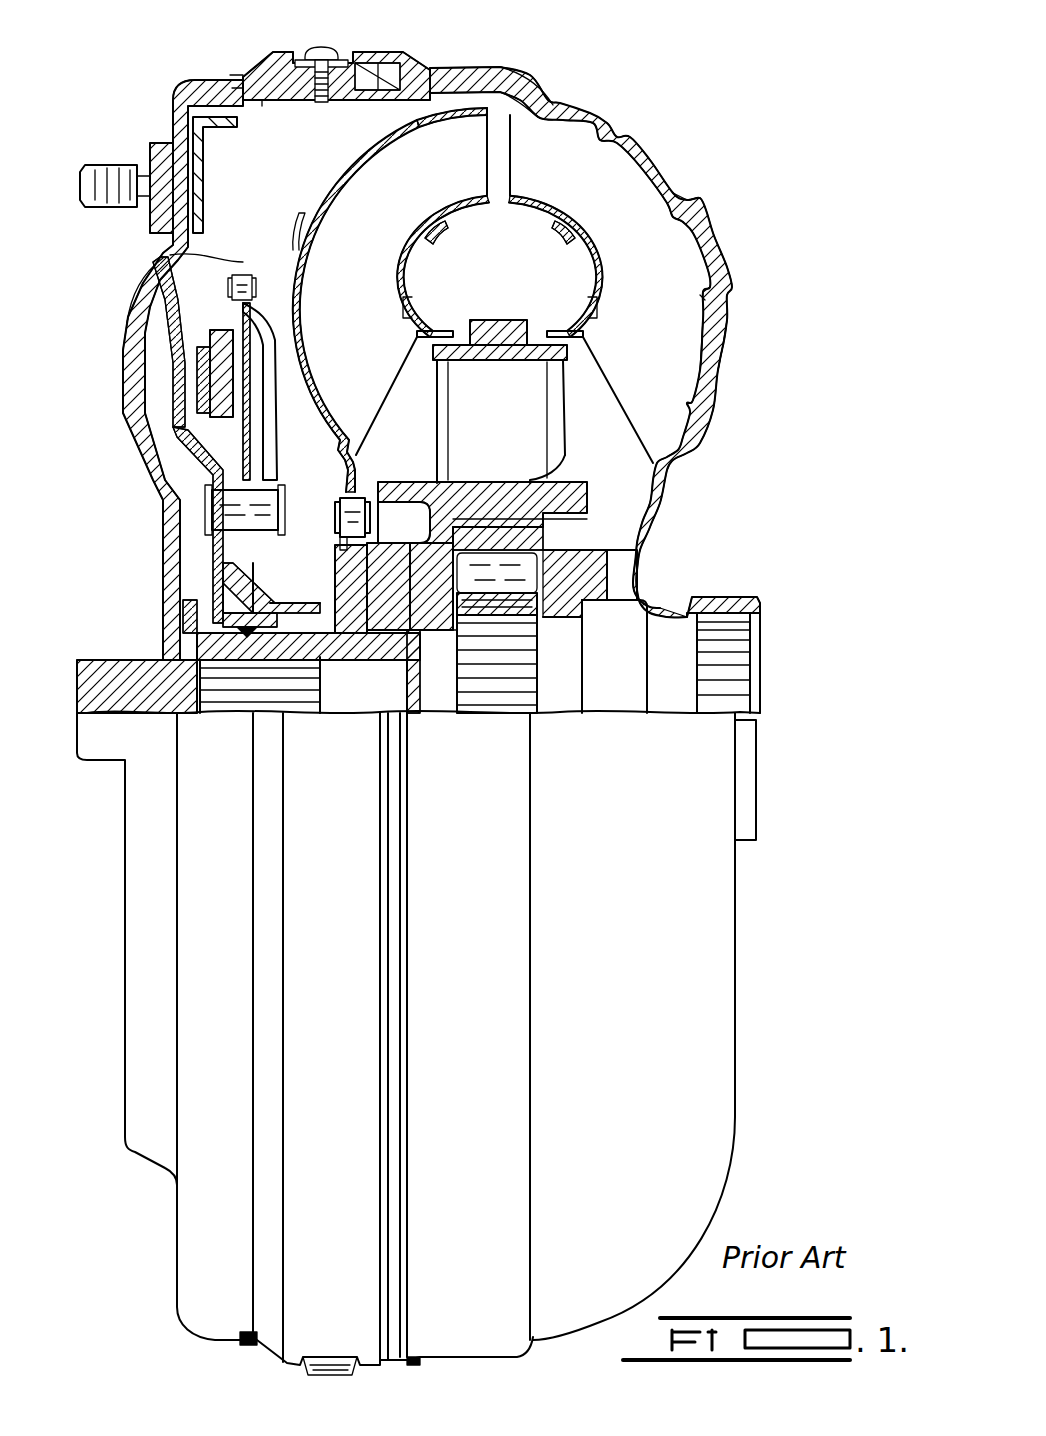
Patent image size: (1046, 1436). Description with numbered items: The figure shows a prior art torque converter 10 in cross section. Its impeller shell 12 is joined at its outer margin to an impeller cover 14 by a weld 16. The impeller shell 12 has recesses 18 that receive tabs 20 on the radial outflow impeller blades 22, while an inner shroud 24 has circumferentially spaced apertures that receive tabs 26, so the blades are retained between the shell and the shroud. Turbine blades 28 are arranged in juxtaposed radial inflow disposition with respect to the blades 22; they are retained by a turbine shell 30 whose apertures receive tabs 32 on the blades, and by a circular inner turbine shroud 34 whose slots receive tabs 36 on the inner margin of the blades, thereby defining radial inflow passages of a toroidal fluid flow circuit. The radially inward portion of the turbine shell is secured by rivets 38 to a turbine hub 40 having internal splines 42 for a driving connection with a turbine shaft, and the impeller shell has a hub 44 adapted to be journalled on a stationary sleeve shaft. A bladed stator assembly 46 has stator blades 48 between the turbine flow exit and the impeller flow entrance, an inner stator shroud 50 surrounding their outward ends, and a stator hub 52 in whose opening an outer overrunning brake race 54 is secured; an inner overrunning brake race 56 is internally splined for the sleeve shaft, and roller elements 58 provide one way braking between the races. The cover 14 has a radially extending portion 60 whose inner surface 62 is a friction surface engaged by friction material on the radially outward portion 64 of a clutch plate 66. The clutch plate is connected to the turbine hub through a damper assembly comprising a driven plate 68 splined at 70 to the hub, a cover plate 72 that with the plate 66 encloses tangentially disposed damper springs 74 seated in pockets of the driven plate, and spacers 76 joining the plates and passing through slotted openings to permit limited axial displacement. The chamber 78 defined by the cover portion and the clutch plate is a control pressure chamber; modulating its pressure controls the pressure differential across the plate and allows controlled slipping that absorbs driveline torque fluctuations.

The torque converter 10 is at (642, 129).
The impeller shell 12 is at (553, 105).
The impeller cover 14 is at (203, 81).
The weld 16 is at (410, 62).
The recesses 18 is at (697, 240).
The tabs 20 is at (705, 292).
The radial outflow impeller blades 22 is at (688, 340).
The inner shroud 24 is at (597, 270).
The tabs 26 is at (553, 219).
The turbine blades 28 is at (380, 378).
The turbine shell 30 is at (300, 282).
The tabs 32 is at (298, 222).
The inner turbine shroud 34 is at (462, 197).
The tabs 36 is at (417, 237).
The rivets 38 is at (337, 510).
The turbine hub 40 is at (287, 640).
The internal splines 42 is at (307, 687).
The hub 44 is at (722, 600).
The bladed stator assembly 46 is at (530, 478).
The stator blades 48 is at (465, 418).
The inner stator shroud 50 is at (493, 322).
The stator hub 52 is at (433, 630).
The outer overrunning brake race 54 is at (480, 537).
The inner overrunning brake race 56 is at (530, 630).
The overrunning clutch roller elements 58 is at (535, 588).
The radially extending portion 60 is at (178, 213).
The inner surface 62 is at (190, 173).
The radially outward portion 64 is at (190, 235).
The clutch plate 66 is at (190, 247).
The driven plate 68 is at (222, 430).
The splines 70 is at (297, 612).
The cover plate 72 is at (243, 370).
The damper springs 74 is at (260, 397).
The spacers 76 is at (233, 510).
The chamber 78 is at (180, 467).